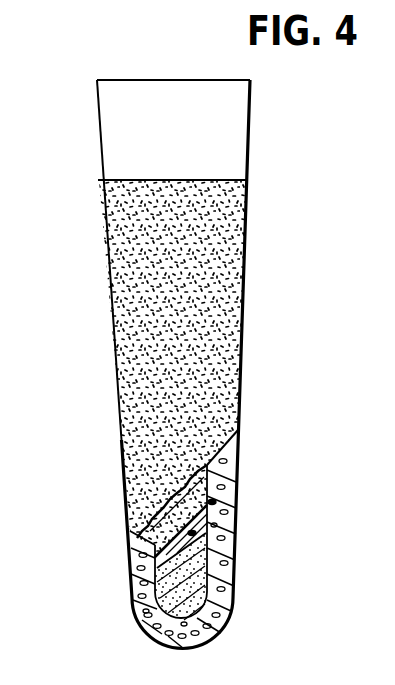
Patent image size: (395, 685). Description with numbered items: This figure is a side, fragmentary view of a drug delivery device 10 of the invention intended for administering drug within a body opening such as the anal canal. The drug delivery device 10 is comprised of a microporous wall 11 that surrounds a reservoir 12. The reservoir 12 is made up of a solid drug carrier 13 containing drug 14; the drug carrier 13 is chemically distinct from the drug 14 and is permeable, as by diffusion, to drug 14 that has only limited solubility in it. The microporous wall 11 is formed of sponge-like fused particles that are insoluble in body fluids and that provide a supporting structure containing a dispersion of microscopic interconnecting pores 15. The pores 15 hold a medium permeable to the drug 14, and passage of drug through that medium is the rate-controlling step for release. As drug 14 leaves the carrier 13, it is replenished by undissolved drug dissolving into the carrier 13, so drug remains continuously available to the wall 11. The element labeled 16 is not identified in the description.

The drug delivery device 10 is at (267, 180).
The microporous wall 11 is at (228, 572).
The reservoir 12 is at (162, 595).
The drug carrier 13 is at (165, 566).
The drug 14 is at (222, 345).
The pores 15 is at (222, 647).
The empty upper portion of tube 16 is at (112, 142).